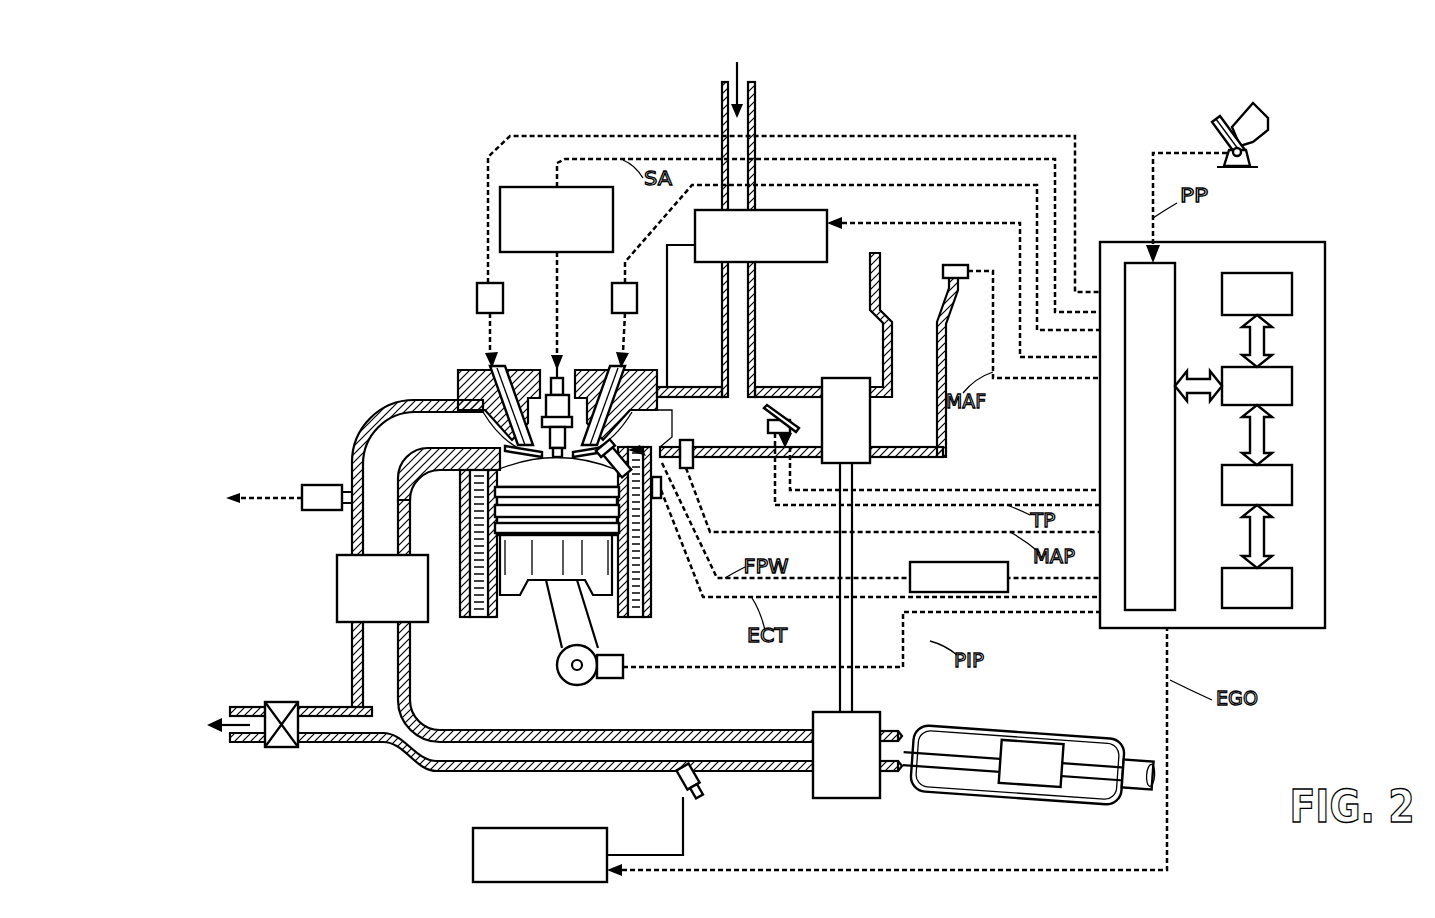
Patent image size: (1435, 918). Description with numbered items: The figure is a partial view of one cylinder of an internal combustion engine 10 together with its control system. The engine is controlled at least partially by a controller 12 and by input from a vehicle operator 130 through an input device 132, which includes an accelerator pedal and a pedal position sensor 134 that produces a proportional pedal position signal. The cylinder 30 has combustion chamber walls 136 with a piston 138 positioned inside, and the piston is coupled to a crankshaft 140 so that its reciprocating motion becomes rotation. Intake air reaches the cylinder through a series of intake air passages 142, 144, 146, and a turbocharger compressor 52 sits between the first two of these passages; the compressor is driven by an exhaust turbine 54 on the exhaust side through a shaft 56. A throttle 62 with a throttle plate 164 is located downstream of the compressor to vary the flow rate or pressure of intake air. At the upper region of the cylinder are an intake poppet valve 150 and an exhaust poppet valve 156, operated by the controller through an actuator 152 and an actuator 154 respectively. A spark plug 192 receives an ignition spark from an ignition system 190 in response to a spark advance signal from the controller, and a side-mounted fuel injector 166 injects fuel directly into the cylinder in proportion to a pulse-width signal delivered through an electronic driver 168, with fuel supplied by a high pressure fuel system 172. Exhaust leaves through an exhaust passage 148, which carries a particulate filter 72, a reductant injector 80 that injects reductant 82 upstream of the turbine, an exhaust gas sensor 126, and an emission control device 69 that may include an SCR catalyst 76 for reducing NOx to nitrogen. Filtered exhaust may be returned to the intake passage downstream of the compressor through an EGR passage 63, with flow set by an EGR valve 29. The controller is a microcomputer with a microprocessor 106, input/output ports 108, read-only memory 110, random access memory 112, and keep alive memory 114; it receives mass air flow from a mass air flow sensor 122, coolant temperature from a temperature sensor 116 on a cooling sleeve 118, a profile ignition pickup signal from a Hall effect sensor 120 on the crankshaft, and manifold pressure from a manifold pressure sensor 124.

The internal combustion engine 10 is at (383, 316).
The controller 12 is at (1246, 421).
The EGR valve 29 is at (283, 702).
The cylinder 30 is at (488, 468).
The compressor 52 is at (830, 378).
The exhaust turbine 54 is at (813, 788).
The shaft 56 is at (852, 676).
The throttle 62 is at (775, 435).
The EGR passage 63 is at (338, 744).
The emission control device 69 is at (1029, 753).
The particulate filter 72 is at (371, 601).
The SCR catalyst 76 is at (1020, 773).
The reductant injector 80 is at (694, 788).
The reductant 82 is at (529, 867).
The microprocessor 106 is at (1292, 378).
The input/output ports 108 is at (1178, 272).
The read-only memory 110 is at (1292, 290).
The random access memory 112 is at (1292, 482).
The keep alive memory 114 is at (1292, 584).
The temperature sensor 116 is at (661, 500).
The cooling sleeve 118 is at (648, 602).
The Hall effect sensor 120 is at (613, 680).
The mass air flow sensor 122 is at (962, 264).
The manifold pressure sensor 124 is at (692, 470).
The exhaust gas sensor 126 is at (302, 487).
The vehicle operator 130 is at (1268, 118).
The input device 132 is at (1215, 132).
The pedal position sensor 134 is at (1250, 152).
The combustion chamber walls 136 is at (487, 607).
The piston 138 is at (535, 612).
The crankshaft 140 is at (568, 685).
The intake air passage 142 is at (902, 300).
The intake air passage 144 is at (808, 423).
The intake air passage 146 is at (665, 431).
The exhaust passage 148 is at (415, 441).
The intake poppet valve 150 is at (558, 395).
The actuator 152 is at (612, 300).
The actuator 154 is at (477, 292).
The exhaust poppet valve 156 is at (482, 410).
The throttle plate 164 is at (797, 435).
The fuel injector 166 is at (853, 502).
The electronic driver 168 is at (912, 565).
The high pressure fuel system 172 is at (757, 262).
The ignition system 190 is at (517, 187).
The spark plug 192 is at (551, 365).